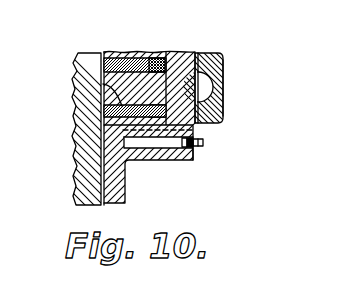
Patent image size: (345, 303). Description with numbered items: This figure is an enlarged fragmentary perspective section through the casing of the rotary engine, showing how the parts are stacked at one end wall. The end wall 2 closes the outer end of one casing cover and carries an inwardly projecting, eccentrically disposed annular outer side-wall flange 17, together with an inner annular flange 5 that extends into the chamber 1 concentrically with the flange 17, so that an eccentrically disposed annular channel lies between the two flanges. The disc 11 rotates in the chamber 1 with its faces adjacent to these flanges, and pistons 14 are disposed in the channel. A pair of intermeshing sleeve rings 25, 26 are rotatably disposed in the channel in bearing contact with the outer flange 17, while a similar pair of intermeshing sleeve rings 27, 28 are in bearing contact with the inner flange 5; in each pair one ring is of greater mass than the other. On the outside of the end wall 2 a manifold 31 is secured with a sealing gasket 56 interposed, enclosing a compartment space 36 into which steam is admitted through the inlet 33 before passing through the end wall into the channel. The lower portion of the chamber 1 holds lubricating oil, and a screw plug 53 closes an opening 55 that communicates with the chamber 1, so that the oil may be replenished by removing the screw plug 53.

The chamber 1 is at (103, 182).
The disc 11 is at (82, 145).
The piston 14 is at (72, 73).
The end wall 2 is at (190, 89).
The sleeve ring 27 is at (138, 30).
The sleeve ring 28 is at (157, 58).
The inner annular flange 5 is at (149, 58).
The sleeve ring 26 is at (122, 106).
The compartment space 36 is at (222, 53).
The manifold 31 is at (224, 67).
The sleeve ring 25 is at (186, 97).
The sealing gasket 56 is at (198, 53).
The outer side-wall flange 17 is at (185, 160).
The opening 55 is at (153, 142).
The screw plug 53 is at (203, 142).
The inlet 33 is at (231, 3).